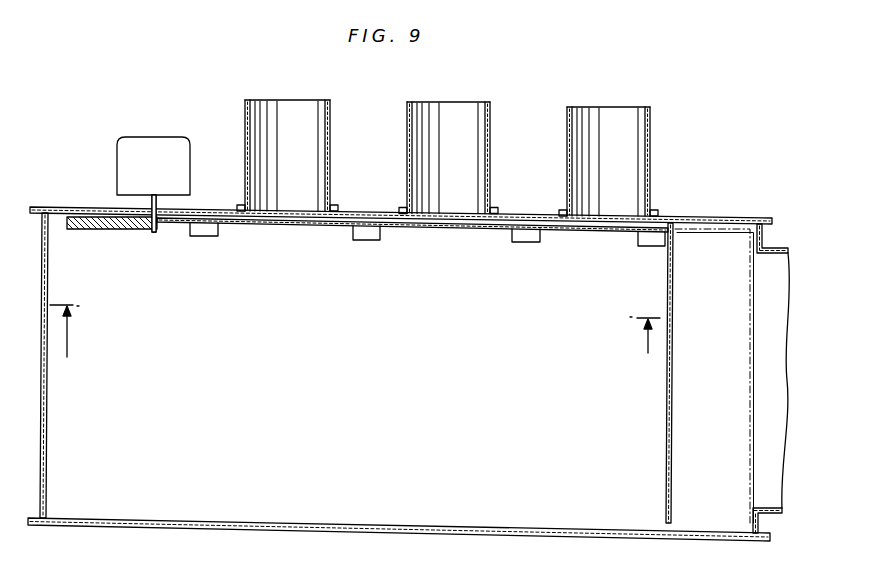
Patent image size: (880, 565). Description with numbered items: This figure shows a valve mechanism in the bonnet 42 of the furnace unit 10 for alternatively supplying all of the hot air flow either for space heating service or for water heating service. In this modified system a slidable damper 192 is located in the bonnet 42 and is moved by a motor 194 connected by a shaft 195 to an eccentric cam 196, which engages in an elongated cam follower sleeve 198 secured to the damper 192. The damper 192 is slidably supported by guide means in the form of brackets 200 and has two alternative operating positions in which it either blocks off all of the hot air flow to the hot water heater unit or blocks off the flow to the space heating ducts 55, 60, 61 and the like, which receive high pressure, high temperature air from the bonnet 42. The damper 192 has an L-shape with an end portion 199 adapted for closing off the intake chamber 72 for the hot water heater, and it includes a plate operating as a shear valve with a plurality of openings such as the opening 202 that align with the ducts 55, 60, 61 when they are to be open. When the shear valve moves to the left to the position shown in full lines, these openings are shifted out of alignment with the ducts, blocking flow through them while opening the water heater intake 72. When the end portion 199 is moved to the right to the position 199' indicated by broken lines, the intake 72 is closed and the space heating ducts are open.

The furnace unit 10 is at (357, 319).
The bonnet 42 is at (79, 208).
The space heating duct 55 is at (567, 128).
The space heating duct 60 is at (408, 127).
The space heating duct 61 is at (247, 115).
The intake chamber 72 is at (772, 248).
The slidable damper 192 is at (290, 224).
The motor 194 is at (172, 137).
The shaft 195 is at (160, 208).
The eccentric cam 196 is at (108, 231).
The cam follower sleeve 198 is at (158, 231).
The end portion 199 is at (647, 373).
The end portion position 199' is at (714, 376).
The bracket 200 is at (370, 236).
The opening 202 is at (232, 230).